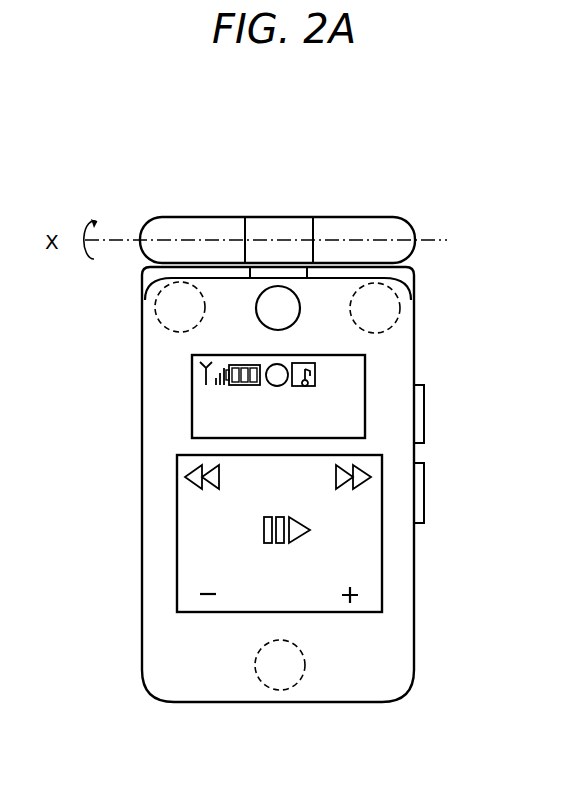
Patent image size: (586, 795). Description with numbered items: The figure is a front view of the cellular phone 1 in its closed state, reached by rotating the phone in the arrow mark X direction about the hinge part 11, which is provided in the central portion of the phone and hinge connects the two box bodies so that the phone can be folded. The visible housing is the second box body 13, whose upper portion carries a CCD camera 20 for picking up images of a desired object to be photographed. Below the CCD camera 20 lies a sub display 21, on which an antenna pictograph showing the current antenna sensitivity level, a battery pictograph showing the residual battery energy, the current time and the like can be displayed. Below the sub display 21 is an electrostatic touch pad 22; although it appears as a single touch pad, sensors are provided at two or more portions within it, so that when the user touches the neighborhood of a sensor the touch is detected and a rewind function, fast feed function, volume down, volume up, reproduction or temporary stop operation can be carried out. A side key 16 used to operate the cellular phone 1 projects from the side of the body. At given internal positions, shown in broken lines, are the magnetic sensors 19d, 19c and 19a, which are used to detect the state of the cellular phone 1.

The cellular phone 1 is at (448, 598).
The hinge part 11 is at (413, 222).
The second box body 13 is at (142, 428).
The side key 16 is at (424, 412).
The magnetic sensor 19a is at (256, 665).
The magnetic sensor 19c is at (400, 312).
The magnetic sensor 19d is at (155, 311).
The CCD camera 20 is at (278, 286).
The sub display 21 is at (192, 396).
The electrostatic touch pad 22 is at (177, 532).